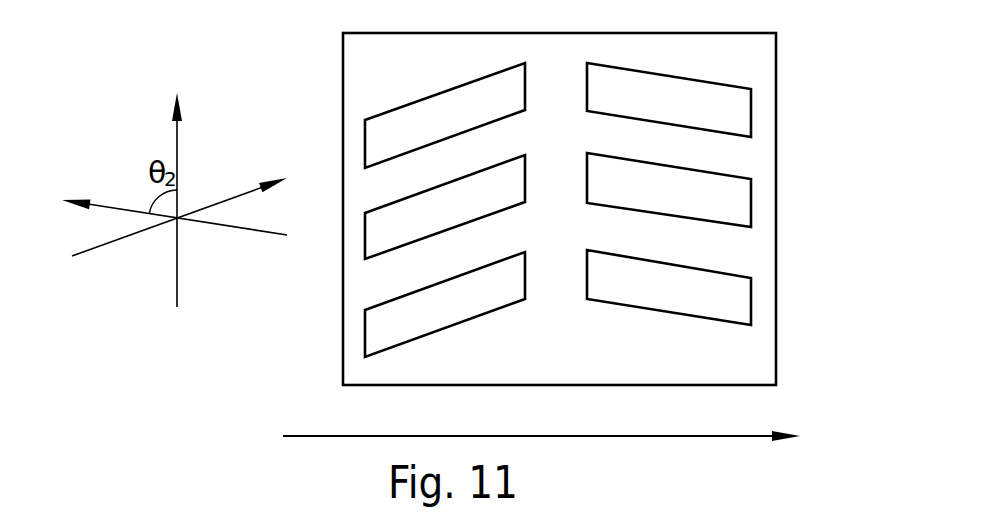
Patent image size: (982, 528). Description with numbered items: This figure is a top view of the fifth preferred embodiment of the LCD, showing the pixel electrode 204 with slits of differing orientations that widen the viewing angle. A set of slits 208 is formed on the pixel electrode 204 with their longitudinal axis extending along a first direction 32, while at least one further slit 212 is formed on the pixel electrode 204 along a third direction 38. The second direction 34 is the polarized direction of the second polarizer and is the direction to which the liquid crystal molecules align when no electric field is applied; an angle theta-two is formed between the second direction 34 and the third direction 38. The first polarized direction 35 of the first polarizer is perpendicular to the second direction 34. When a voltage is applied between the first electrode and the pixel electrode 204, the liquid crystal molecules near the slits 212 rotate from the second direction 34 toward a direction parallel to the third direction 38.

The first direction 32 is at (196, 208).
The second direction 34 is at (177, 183).
The third direction 38 is at (157, 210).
The first polarized direction 35 is at (560, 435).
The pixel electrode 204 is at (765, 350).
The slit 208 is at (377, 322).
The slit 212 is at (738, 210).